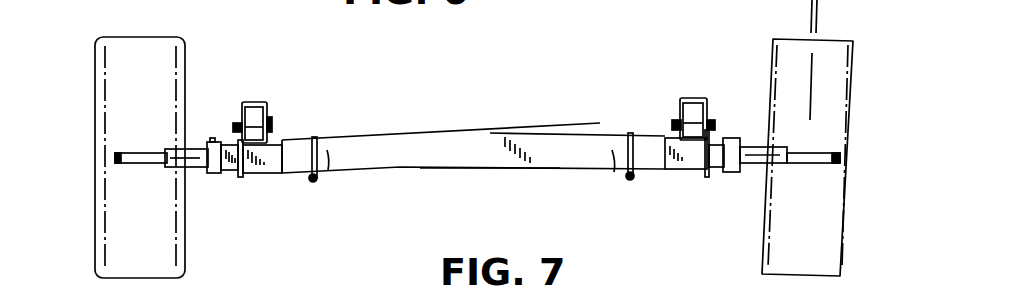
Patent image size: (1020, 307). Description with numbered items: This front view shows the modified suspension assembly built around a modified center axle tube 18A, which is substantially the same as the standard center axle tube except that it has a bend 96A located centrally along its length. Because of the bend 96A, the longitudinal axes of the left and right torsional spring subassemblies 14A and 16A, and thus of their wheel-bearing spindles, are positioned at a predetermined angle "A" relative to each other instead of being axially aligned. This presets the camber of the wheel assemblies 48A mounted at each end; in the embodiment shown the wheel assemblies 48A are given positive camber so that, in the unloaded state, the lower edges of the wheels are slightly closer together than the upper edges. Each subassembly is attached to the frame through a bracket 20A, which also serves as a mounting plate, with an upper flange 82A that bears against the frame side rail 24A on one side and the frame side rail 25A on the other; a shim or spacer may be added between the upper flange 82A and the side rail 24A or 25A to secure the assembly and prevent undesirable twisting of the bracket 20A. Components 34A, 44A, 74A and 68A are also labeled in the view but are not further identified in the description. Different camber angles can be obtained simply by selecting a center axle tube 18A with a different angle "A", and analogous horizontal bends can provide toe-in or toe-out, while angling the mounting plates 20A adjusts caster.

The wheel assembly 48A is at (125, 36).
The axle spindle shaft 34A is at (227, 138).
The collar 44A is at (212, 172).
The bracket 20A is at (240, 178).
The frame side rail 24A is at (268, 108).
The torsional spring subassembly 14A is at (271, 172).
The modified center axle tube 18A is at (403, 134).
The bend 96A is at (462, 168).
The predetermined angle A is at (581, 157).
The clamp 74A is at (314, 137).
The weld 68A is at (330, 157).
The torsional spring subassembly 16A is at (668, 171).
The frame side rail 25A is at (693, 99).
The upper flange 82A is at (710, 118).